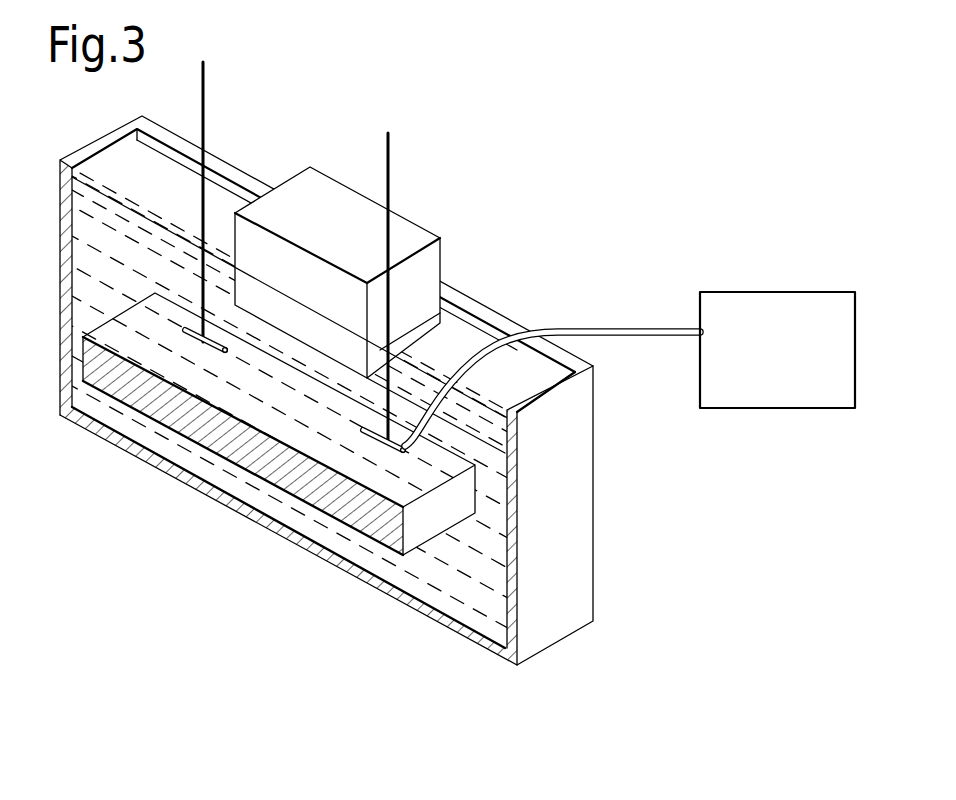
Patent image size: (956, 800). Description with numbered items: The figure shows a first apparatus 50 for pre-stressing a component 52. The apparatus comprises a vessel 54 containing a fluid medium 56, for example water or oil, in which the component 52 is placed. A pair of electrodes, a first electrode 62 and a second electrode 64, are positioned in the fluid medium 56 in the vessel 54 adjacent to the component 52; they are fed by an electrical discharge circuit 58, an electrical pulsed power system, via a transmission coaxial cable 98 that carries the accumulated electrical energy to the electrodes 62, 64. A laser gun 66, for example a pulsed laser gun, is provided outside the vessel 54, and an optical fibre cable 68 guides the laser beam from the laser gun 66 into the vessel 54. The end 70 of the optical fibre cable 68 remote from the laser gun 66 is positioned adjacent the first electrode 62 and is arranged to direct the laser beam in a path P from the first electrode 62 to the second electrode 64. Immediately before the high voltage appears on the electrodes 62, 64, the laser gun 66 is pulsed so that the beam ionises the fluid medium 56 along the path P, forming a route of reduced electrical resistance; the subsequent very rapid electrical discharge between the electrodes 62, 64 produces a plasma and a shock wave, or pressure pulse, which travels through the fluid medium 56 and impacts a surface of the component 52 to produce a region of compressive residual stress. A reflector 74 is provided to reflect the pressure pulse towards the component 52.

The first apparatus 50 is at (371, 416).
The component 52 is at (392, 528).
The vessel 54 is at (517, 623).
The fluid medium 56 is at (477, 642).
The electrical discharge circuit 58 is at (513, 237).
The first electrode 62 is at (383, 457).
The second electrode 64 is at (197, 347).
The laser gun 66 is at (786, 367).
The optical fibre cable 68 is at (581, 329).
The end of the optical fibre cable 70 is at (291, 515).
The reflector 74 is at (413, 235).
The transmission coaxial cable 98 is at (207, 130).
The path P is at (273, 377).